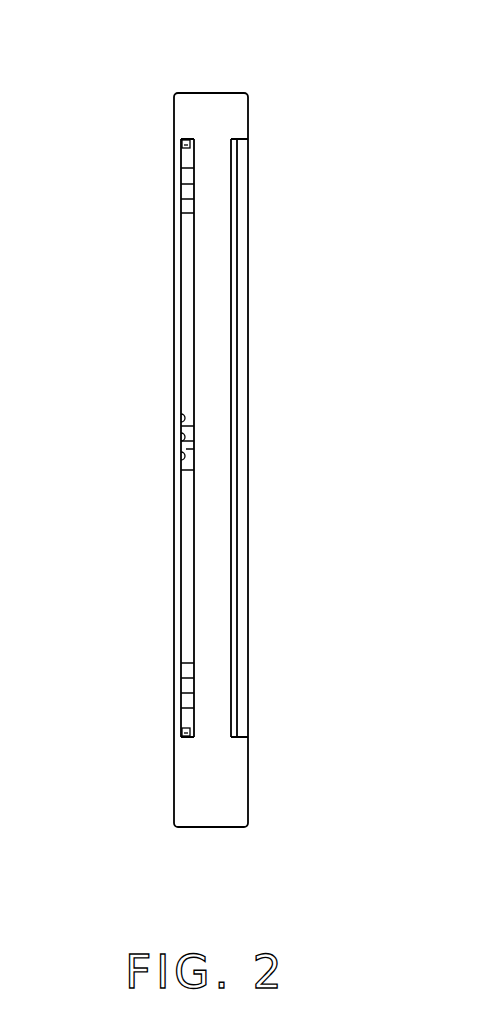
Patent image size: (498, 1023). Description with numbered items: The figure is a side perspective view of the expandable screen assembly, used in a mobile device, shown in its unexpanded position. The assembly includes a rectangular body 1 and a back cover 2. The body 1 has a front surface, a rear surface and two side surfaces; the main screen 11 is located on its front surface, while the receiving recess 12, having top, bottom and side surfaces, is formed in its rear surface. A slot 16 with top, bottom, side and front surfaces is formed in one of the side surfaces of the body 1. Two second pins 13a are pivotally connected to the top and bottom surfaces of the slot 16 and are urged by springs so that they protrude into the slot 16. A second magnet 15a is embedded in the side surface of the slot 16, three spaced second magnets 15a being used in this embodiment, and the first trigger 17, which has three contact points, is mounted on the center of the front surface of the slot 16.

The body 1 is at (213, 113).
The main screen 11 is at (174, 303).
The receiving recess 12 is at (242, 142).
The second pins 13a is at (182, 143).
The second magnet 15a is at (190, 448).
The slot 16 is at (186, 357).
The first trigger 17 is at (183, 437).
The back cover 2 is at (242, 221).